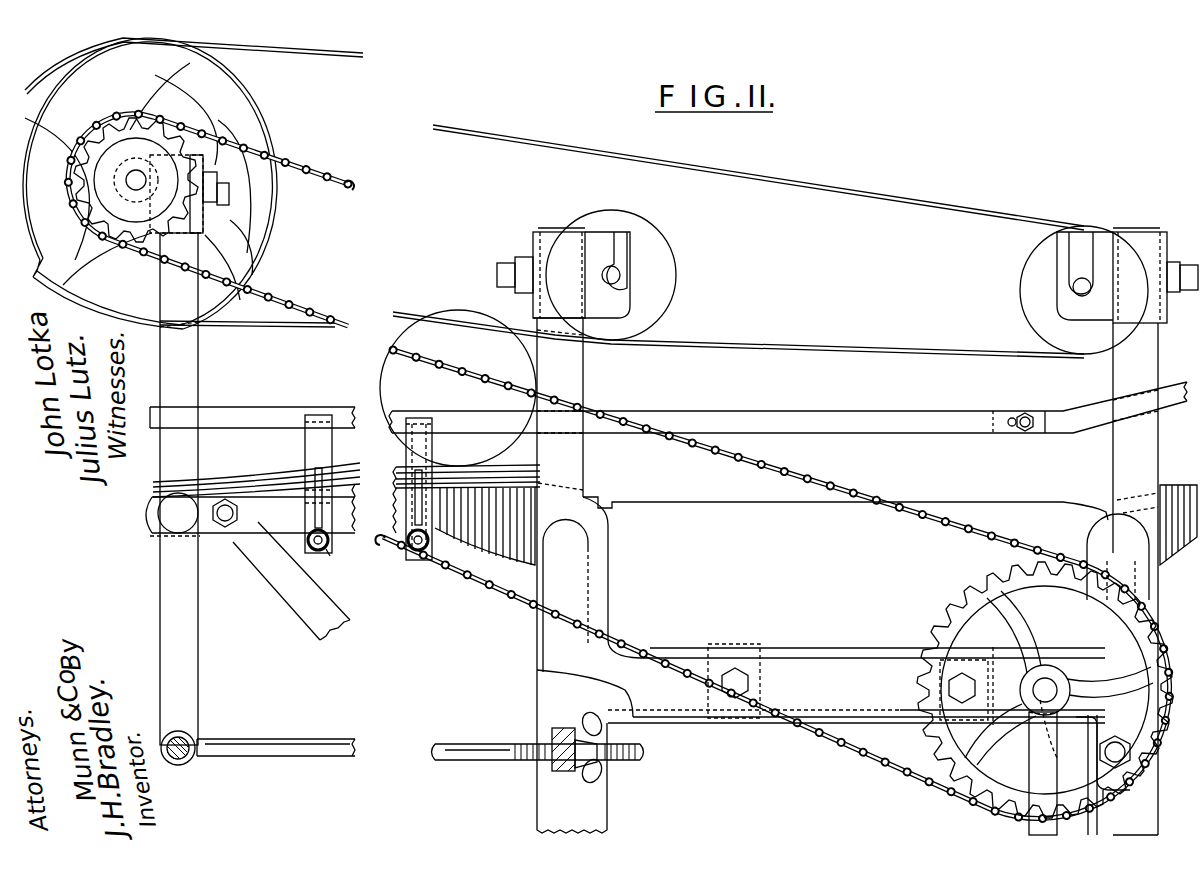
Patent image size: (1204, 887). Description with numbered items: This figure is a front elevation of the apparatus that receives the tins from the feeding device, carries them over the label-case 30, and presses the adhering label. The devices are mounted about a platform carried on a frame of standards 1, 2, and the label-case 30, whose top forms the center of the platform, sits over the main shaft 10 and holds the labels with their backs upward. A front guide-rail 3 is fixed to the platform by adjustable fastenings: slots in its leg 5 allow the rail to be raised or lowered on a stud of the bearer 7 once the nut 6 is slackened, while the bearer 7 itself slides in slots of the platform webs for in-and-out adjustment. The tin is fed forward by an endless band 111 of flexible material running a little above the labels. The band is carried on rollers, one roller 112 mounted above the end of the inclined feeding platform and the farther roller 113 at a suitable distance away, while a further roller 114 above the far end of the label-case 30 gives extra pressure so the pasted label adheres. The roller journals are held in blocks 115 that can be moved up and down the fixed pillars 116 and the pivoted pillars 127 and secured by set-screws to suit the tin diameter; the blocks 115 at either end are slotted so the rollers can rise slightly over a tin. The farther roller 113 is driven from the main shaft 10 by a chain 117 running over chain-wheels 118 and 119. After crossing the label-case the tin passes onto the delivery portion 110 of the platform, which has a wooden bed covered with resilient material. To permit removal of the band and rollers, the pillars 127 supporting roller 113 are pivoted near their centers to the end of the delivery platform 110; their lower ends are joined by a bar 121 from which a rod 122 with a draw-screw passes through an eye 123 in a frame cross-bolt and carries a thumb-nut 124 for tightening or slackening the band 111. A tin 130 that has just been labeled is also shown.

The standard 1 is at (856, 684).
The standard 2 is at (588, 665).
The guide-rail 3 is at (668, 407).
The leg 5 is at (368, 487).
The nut 6 is at (329, 544).
The bearer 7 is at (330, 556).
The main shaft 10 is at (1050, 692).
The label-case 30 is at (866, 548).
The delivery portion of the platform 110 is at (253, 551).
The endless band 111 is at (345, 52).
The roller 112 is at (1084, 290).
The roller 113 is at (185, 48).
The roller 114 is at (611, 275).
The block 115 is at (185, 224).
The fixed pillar 116 is at (847, 576).
The chain 117 is at (346, 192).
The chain-wheel 118 is at (1160, 673).
The chain-wheel 119 is at (136, 180).
The bar 121 is at (186, 758).
The rod 122 is at (276, 750).
The eye 123 is at (563, 728).
The thumb-nut 124 is at (603, 766).
The pivoted pillar 127 is at (179, 489).
The tin 130 is at (458, 388).